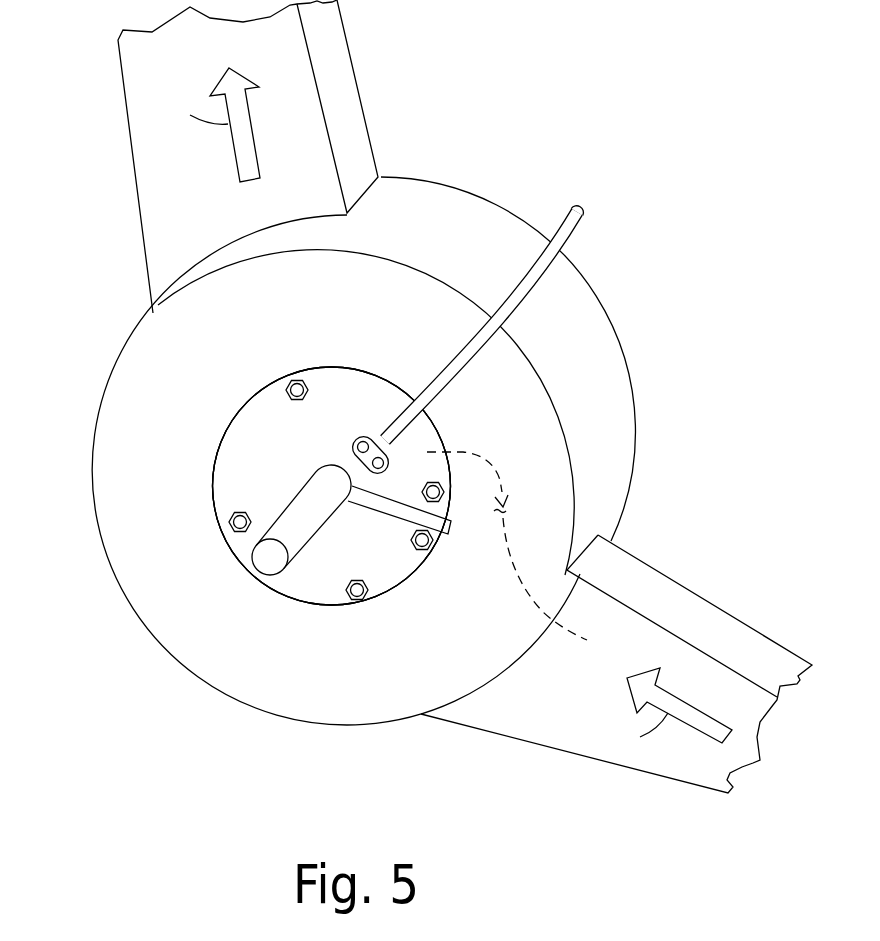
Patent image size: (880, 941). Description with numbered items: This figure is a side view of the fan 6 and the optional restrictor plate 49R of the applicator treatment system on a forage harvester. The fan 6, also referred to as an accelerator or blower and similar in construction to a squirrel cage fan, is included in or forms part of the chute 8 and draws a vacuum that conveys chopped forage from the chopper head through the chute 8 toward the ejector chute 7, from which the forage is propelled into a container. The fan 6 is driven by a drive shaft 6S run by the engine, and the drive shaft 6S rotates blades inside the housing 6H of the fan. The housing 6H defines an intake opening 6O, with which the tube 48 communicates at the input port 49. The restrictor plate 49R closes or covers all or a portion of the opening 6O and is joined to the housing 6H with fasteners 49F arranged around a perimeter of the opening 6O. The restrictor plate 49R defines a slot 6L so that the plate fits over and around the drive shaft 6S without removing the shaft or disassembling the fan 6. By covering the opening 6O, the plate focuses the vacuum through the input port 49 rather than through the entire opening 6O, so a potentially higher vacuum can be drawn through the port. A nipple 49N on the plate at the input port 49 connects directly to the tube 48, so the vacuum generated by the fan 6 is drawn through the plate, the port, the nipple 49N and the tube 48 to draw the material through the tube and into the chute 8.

The fan 6 is at (237, 700).
The housing 6H is at (97, 415).
The intake opening 6O is at (290, 598).
The drive shaft 6S is at (293, 533).
The slot 6L is at (388, 508).
The ejector chute 7 is at (137, 183).
The chute 8 is at (668, 600).
The tube 48 is at (570, 243).
The input port 49 is at (353, 413).
The fasteners 49F is at (232, 524).
The nipple 49N is at (357, 451).
The restrictor plate 49R is at (257, 449).